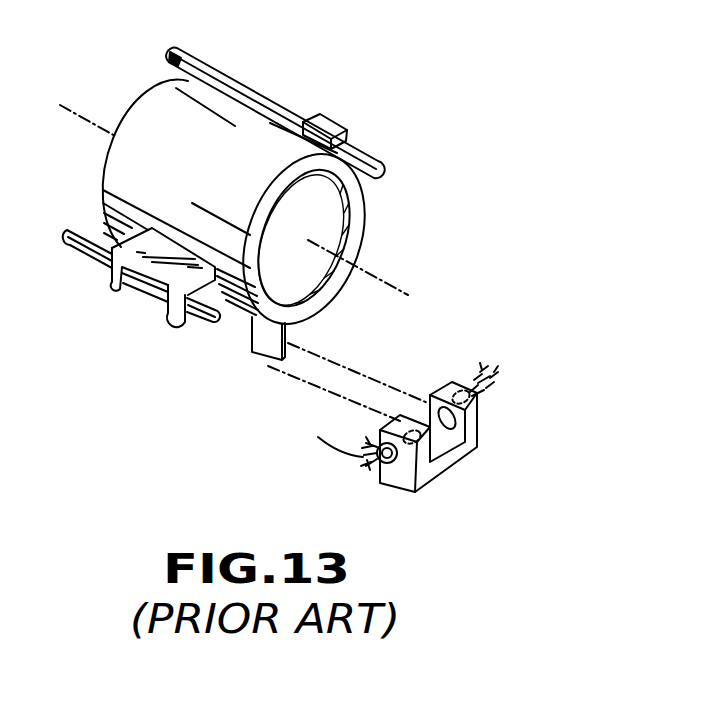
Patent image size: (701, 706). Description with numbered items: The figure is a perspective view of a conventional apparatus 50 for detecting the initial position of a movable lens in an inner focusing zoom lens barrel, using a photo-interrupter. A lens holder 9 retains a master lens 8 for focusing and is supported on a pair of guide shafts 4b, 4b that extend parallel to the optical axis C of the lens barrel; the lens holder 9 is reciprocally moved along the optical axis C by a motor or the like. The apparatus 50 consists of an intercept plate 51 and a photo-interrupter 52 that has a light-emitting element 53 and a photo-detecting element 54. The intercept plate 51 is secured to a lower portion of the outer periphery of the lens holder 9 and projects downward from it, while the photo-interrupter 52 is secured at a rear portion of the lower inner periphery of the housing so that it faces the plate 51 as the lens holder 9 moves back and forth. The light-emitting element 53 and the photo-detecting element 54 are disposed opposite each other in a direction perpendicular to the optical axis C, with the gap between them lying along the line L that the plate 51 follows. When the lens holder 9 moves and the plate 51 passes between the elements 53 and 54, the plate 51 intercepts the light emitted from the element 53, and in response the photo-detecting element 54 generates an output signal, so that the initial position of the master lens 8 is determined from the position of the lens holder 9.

The guide shaft 4b is at (223, 78).
The lens holder 9 is at (263, 143).
The master lens 8 is at (320, 209).
The optical axis C is at (397, 287).
The intercept plate 51 is at (270, 330).
The apparatus for detecting an initial position 50 is at (367, 425).
The axis line L is at (267, 363).
The photo-interrupter 52 is at (455, 473).
The light-emitting element 53 is at (388, 475).
The photo-detecting element 54 is at (488, 398).